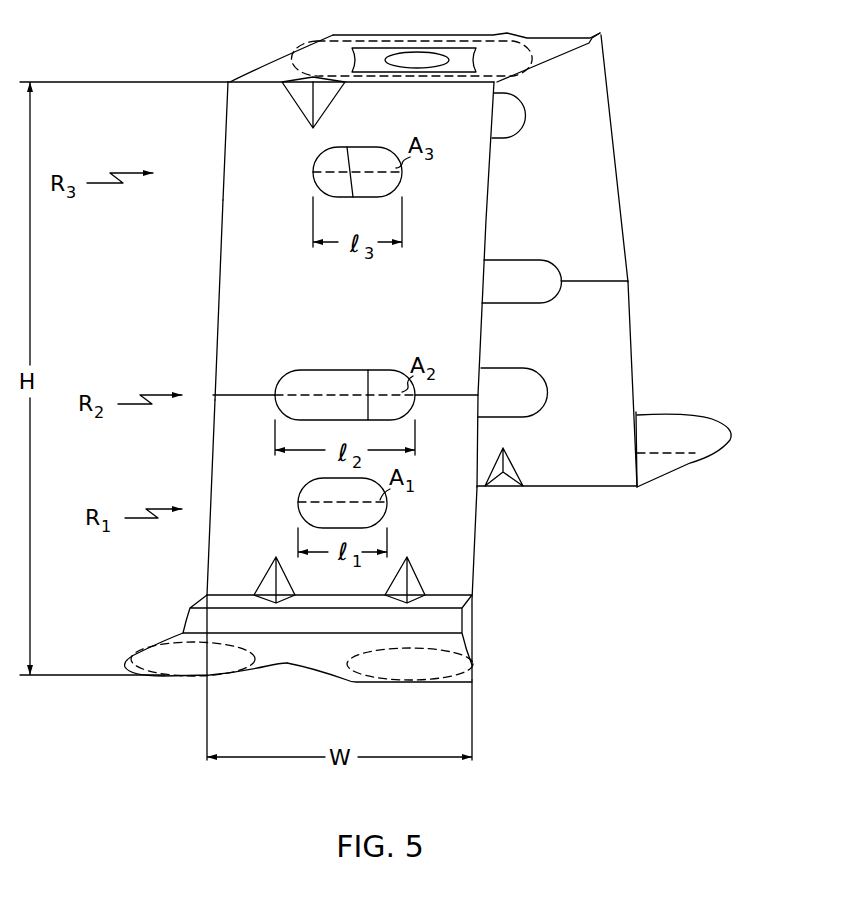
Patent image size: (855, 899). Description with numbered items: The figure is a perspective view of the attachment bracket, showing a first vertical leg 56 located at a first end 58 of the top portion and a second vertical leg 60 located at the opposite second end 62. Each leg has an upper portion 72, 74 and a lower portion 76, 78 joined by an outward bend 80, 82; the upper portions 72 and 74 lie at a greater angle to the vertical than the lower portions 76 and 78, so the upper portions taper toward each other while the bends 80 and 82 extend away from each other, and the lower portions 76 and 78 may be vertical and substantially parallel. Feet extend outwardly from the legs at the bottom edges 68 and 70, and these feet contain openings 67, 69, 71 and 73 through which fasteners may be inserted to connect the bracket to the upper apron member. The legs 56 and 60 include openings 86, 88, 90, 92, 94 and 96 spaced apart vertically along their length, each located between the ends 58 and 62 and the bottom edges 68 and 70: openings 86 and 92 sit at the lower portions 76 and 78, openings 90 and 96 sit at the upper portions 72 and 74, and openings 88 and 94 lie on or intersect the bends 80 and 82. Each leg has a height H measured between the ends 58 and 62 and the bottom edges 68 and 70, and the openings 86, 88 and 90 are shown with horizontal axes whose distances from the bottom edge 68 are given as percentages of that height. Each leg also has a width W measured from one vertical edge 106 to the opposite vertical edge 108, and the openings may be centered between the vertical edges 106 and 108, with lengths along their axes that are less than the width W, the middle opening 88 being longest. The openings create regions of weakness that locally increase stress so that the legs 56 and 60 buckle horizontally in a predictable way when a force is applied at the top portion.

The first vertical leg 56 is at (237, 242).
The first end 58 is at (250, 81).
The second vertical leg 60 is at (604, 193).
The second end 62 is at (587, 40).
The opening 67 is at (189, 668).
The bottom edge 68 is at (474, 597).
The opening 69 is at (419, 669).
The bottom edge 70 is at (639, 488).
The opening 71 is at (687, 386).
The upper portion 72 is at (227, 192).
The opening 73 is at (707, 414).
The upper portion 74 is at (610, 120).
The lower portion 76 is at (222, 543).
The lower portion 78 is at (637, 415).
The bend 80 is at (273, 392).
The bend 82 is at (587, 280).
The opening 86 is at (300, 495).
The opening 88 is at (320, 377).
The opening 90 is at (360, 148).
The opening 92 is at (508, 378).
The opening 94 is at (527, 270).
The opening 96 is at (517, 118).
The vertical edge 106 is at (225, 126).
The vertical edge 108 is at (478, 557).